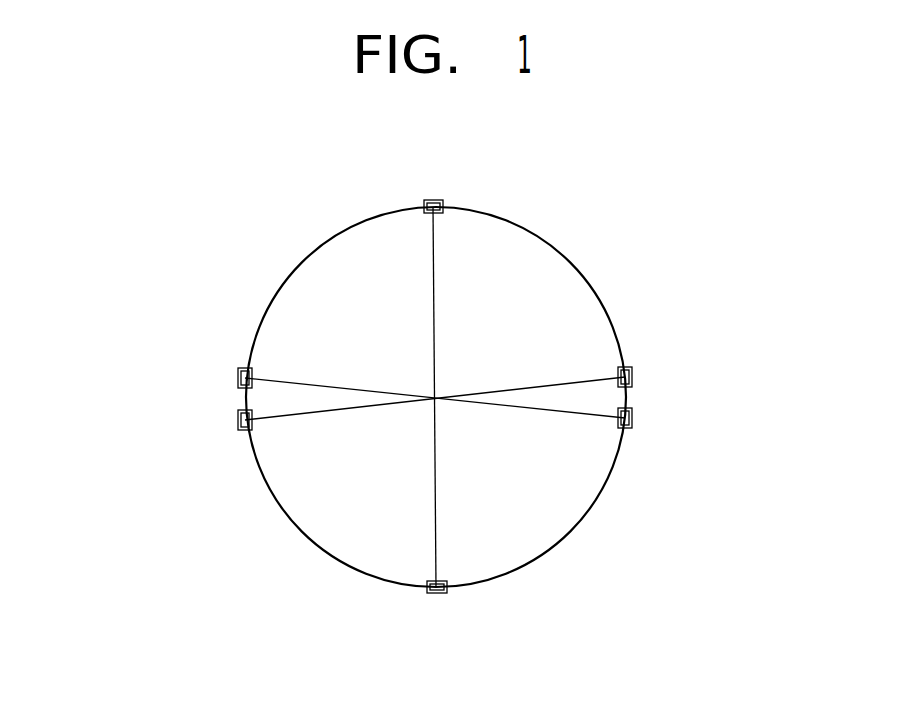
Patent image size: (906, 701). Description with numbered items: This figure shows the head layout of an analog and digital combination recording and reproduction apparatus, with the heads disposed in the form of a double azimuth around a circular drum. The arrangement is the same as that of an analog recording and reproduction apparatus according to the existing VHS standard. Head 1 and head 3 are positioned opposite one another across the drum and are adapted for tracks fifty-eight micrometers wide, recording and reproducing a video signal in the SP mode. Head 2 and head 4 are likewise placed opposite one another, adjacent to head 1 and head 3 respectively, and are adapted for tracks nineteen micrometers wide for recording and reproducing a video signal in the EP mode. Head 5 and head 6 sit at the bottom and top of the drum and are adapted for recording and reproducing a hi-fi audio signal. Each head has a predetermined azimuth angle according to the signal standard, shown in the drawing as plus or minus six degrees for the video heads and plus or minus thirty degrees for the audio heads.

The head H1 1 is at (151, 373).
The head H2 2 is at (137, 418).
The head H3 3 is at (734, 420).
The head H4 4 is at (723, 375).
The head H5 5 is at (450, 609).
The head H6 6 is at (431, 184).